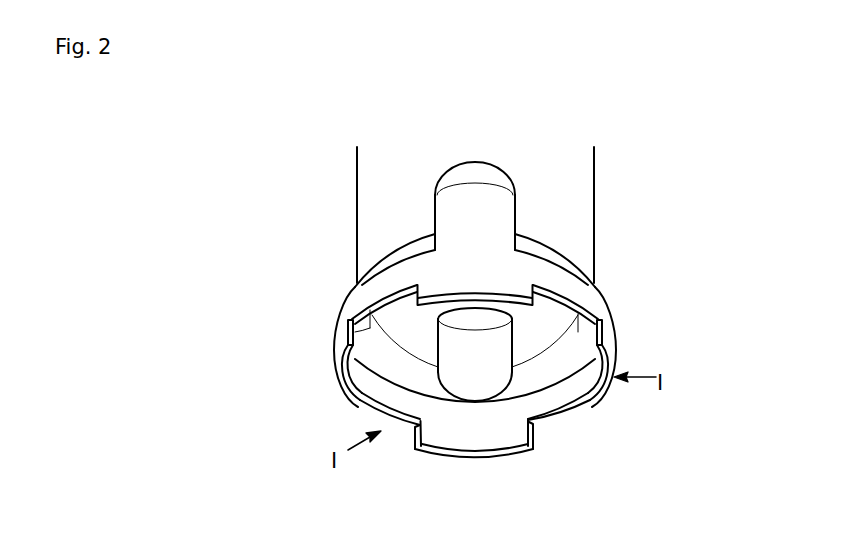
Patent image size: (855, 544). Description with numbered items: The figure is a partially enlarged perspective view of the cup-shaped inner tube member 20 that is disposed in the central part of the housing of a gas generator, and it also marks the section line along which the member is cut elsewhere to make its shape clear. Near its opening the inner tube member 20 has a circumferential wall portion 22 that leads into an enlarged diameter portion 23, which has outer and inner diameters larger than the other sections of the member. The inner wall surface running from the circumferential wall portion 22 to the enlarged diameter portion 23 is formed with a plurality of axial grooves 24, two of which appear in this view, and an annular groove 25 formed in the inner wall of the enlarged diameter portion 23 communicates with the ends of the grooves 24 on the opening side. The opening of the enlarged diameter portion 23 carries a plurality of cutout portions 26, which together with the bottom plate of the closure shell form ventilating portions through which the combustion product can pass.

The inner tube member 20 is at (596, 173).
The circumferential wall portion 22 is at (574, 237).
The enlarged diameter portion 23 is at (594, 301).
The grooves 24 is at (473, 371).
The annular groove 25 is at (547, 373).
The cutout portions 26 is at (349, 321).